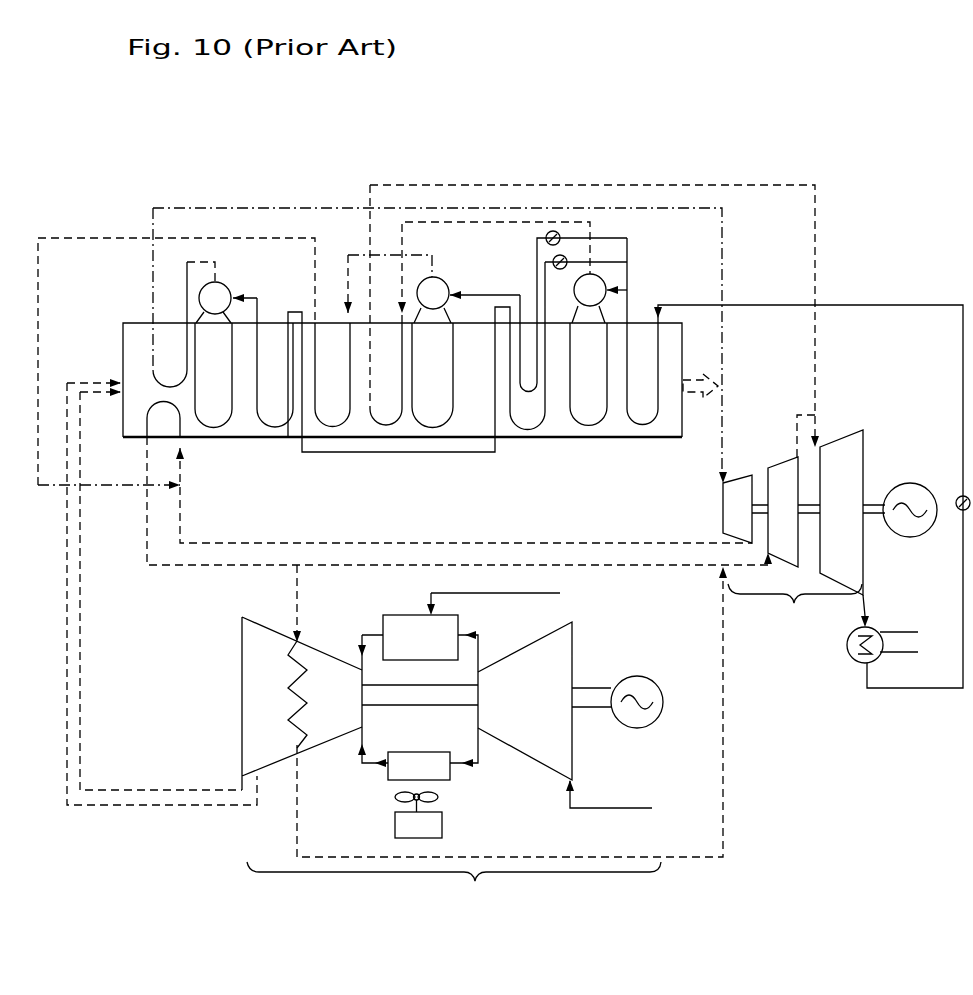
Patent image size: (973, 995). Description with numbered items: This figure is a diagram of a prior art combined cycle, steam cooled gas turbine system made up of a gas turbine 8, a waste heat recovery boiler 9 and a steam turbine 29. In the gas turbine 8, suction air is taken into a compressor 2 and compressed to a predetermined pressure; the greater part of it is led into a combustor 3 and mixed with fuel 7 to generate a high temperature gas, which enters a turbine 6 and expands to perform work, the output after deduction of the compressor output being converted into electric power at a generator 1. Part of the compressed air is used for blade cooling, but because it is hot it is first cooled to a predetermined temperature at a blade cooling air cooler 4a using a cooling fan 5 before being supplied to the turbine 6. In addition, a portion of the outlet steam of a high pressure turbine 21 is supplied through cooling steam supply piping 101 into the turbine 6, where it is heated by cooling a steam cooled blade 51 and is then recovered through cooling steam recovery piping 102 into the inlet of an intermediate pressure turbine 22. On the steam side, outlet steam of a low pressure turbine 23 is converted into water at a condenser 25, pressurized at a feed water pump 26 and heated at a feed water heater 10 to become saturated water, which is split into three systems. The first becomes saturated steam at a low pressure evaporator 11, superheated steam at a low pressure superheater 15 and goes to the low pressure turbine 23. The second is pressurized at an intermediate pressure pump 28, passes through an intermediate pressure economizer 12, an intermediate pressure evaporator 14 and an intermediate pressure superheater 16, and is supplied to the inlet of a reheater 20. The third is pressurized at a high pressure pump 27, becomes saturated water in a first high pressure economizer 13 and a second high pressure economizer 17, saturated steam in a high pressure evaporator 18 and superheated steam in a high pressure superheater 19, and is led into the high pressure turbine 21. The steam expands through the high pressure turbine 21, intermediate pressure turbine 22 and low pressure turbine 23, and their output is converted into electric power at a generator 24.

The generator 1 is at (655, 682).
The compressor 2 is at (572, 634).
The combustor 3 is at (383, 615).
The blade cooling air cooler 4a is at (440, 752).
The cooling fan 5 is at (442, 825).
The turbine 6 is at (243, 623).
The fuel 7 is at (516, 593).
The gas turbine 8 is at (454, 888).
The waste heat recovery boiler 9 is at (123, 323).
The feed water heater 10 is at (634, 387).
The low pressure evaporator 11 is at (579, 387).
The intermediate pressure economizer 12 is at (532, 387).
The first high pressure economizer 13 is at (545, 441).
The intermediate pressure evaporator 14 is at (424, 387).
The low pressure superheater 15 is at (376, 387).
The intermediate pressure superheater 16 is at (324, 384).
The second high pressure economizer 17 is at (264, 384).
The high pressure evaporator 18 is at (204, 384).
The high pressure superheater 19 is at (159, 367).
The reheater 20 is at (154, 418).
The high pressure turbine 21 is at (728, 522).
The intermediate pressure turbine 22 is at (773, 510).
The low pressure turbine 23 is at (832, 509).
The generator 24 is at (929, 529).
The condenser 25 is at (852, 659).
The feed water pump 26 is at (957, 496).
The high pressure pump 27 is at (553, 262).
The intermediate pressure pump 28 is at (546, 238).
The steam turbine 29 is at (795, 611).
The steam cooled blade 51 is at (287, 687).
The cooling steam supply piping 101 is at (297, 590).
The cooling steam recovery piping 102 is at (301, 820).